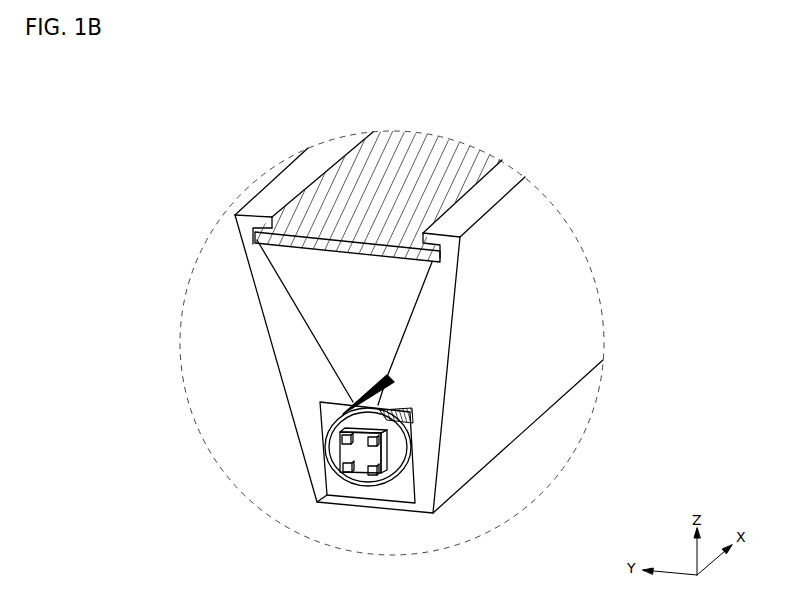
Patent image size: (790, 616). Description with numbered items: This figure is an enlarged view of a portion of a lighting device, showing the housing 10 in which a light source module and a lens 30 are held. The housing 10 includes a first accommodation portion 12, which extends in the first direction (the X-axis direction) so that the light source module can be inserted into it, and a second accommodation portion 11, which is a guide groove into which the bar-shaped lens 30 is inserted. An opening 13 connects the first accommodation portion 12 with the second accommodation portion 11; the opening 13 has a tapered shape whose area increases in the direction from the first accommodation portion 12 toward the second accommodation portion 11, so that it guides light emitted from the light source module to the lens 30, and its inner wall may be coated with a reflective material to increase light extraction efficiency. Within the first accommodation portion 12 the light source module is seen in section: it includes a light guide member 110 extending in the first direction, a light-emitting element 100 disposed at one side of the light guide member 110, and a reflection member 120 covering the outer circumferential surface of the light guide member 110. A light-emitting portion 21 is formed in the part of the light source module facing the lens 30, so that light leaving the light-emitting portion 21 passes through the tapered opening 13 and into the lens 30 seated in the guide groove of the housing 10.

The housing 10 is at (567, 320).
The second accommodation portion 11 is at (252, 252).
The first accommodation portion 12 is at (408, 490).
The opening 13 is at (315, 308).
The light-emitting portion 21 is at (337, 390).
The lens 30 is at (398, 157).
The light-emitting element 100 is at (347, 452).
The light guide member 110 is at (373, 480).
The reflection member 120 is at (350, 483).